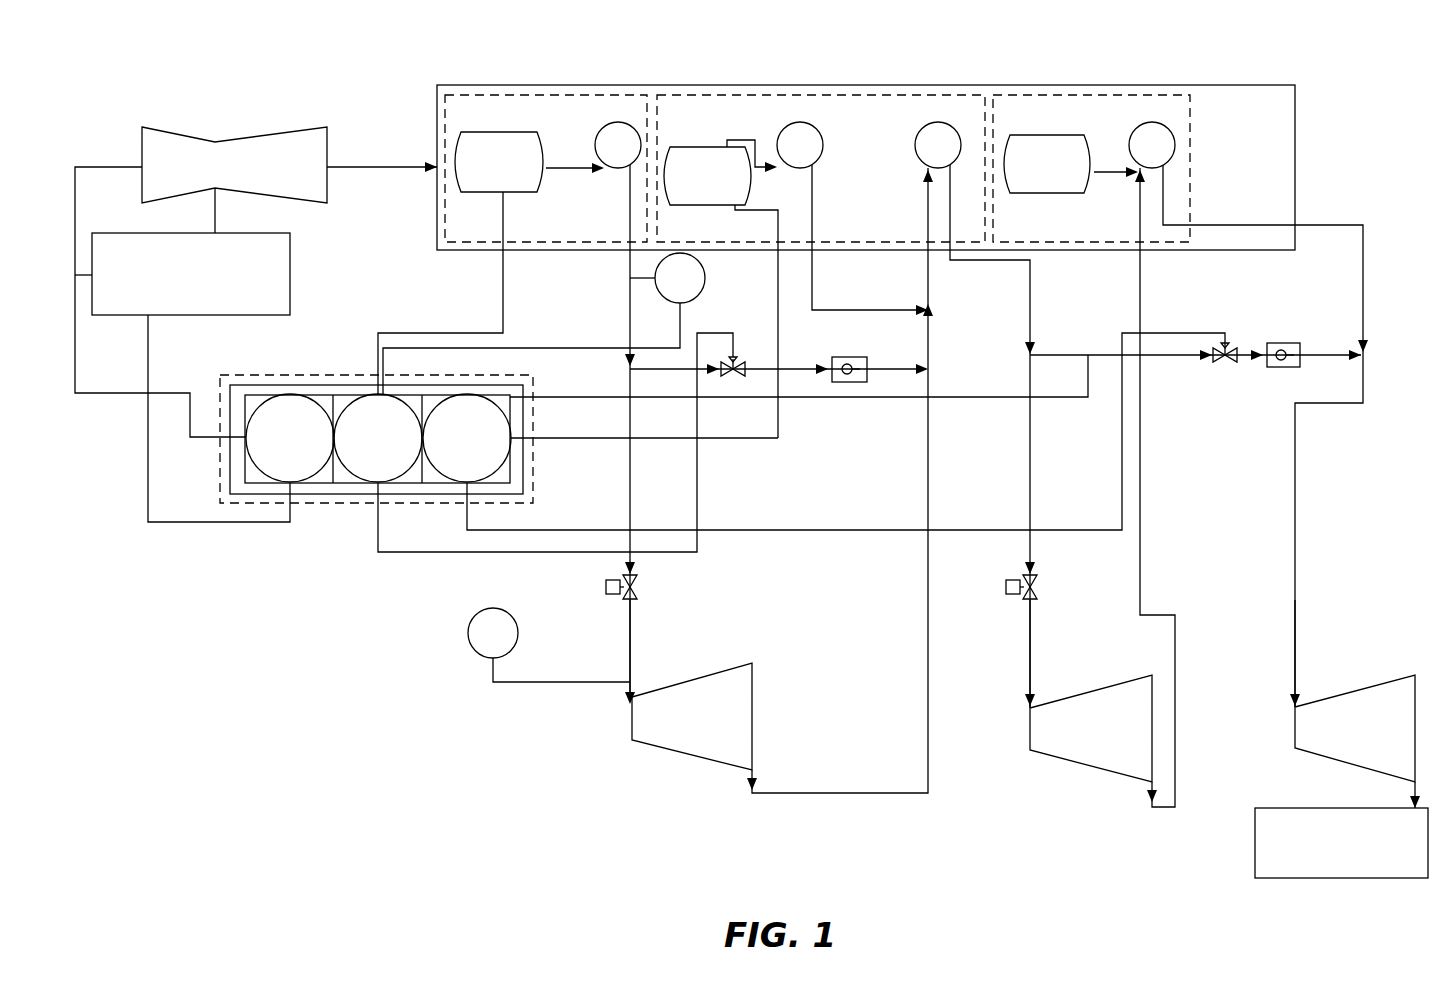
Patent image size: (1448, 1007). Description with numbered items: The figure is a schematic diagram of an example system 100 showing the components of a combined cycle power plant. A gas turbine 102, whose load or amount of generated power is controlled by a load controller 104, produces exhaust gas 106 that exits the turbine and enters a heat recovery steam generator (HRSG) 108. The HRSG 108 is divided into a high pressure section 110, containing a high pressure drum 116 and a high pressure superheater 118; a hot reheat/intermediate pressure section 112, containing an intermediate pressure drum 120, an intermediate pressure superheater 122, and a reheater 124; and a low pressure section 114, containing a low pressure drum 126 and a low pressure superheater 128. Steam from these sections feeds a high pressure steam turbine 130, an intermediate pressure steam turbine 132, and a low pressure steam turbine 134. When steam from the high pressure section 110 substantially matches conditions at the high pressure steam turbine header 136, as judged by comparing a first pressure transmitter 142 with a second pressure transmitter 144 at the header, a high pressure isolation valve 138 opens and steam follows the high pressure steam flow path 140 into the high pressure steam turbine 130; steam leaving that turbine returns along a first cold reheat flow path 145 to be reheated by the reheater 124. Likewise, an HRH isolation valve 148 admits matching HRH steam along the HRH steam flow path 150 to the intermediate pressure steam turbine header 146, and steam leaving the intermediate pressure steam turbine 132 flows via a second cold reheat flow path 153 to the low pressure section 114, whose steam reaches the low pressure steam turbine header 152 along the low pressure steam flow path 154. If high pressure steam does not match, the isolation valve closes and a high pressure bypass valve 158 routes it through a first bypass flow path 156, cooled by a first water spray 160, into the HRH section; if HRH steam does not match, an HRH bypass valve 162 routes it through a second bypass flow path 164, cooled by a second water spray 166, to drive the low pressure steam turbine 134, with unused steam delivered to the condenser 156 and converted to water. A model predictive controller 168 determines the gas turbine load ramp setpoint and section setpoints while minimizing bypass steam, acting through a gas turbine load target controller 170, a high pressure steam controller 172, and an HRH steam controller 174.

The system 100 is at (183, 57).
The gas turbine 102 is at (177, 132).
The load controller 104 is at (290, 235).
The exhaust gas 106 is at (415, 165).
The heat recovery steam generator 108 is at (985, 85).
The high pressure section 110 is at (500, 95).
The hot reheat/intermediate pressure section 112 is at (785, 95).
The low pressure section 114 is at (1140, 95).
The high pressure drum 116 is at (528, 192).
The high pressure superheater 118 is at (598, 150).
The intermediate pressure drum 120 is at (662, 150).
The intermediate pressure superheater 122 is at (818, 138).
The reheater 124 is at (925, 166).
The low pressure drum 126 is at (1025, 193).
The low pressure superheater 128 is at (1130, 150).
The high pressure steam turbine 130 is at (632, 742).
The intermediate pressure steam turbine 132 is at (1030, 752).
The low pressure steam turbine 134 is at (1300, 752).
The high pressure steam turbine header 136 is at (632, 665).
The high pressure isolation valve 138 is at (635, 598).
The high pressure steam flow path 140 is at (630, 500).
The first pressure transmitter 142 is at (690, 300).
The second pressure transmitter 144 is at (480, 612).
The first cold reheat flow path 145 is at (775, 793).
The intermediate pressure steam turbine header 146 is at (1032, 658).
The HRH isolation valve 148 is at (1035, 580).
The HRH steam flow path 150 is at (1030, 478).
The low pressure steam turbine header 152 is at (1297, 665).
The second cold reheat flow path 153 is at (1142, 545).
The low pressure steam flow path 154 is at (1363, 316).
The first bypass flow path 156 is at (790, 369).
The high pressure bypass valve 158 is at (735, 382).
The first water spray 160 is at (867, 360).
The HRH bypass valve 162 is at (1235, 365).
The second bypass flow path 164 is at (1040, 353).
The second water spray 166 is at (1293, 343).
The model predictive controller 168 is at (203, 375).
The gas turbine load target controller 170 is at (290, 395).
The high pressure steam controller 172 is at (372, 395).
The HRH steam controller 174 is at (470, 398).